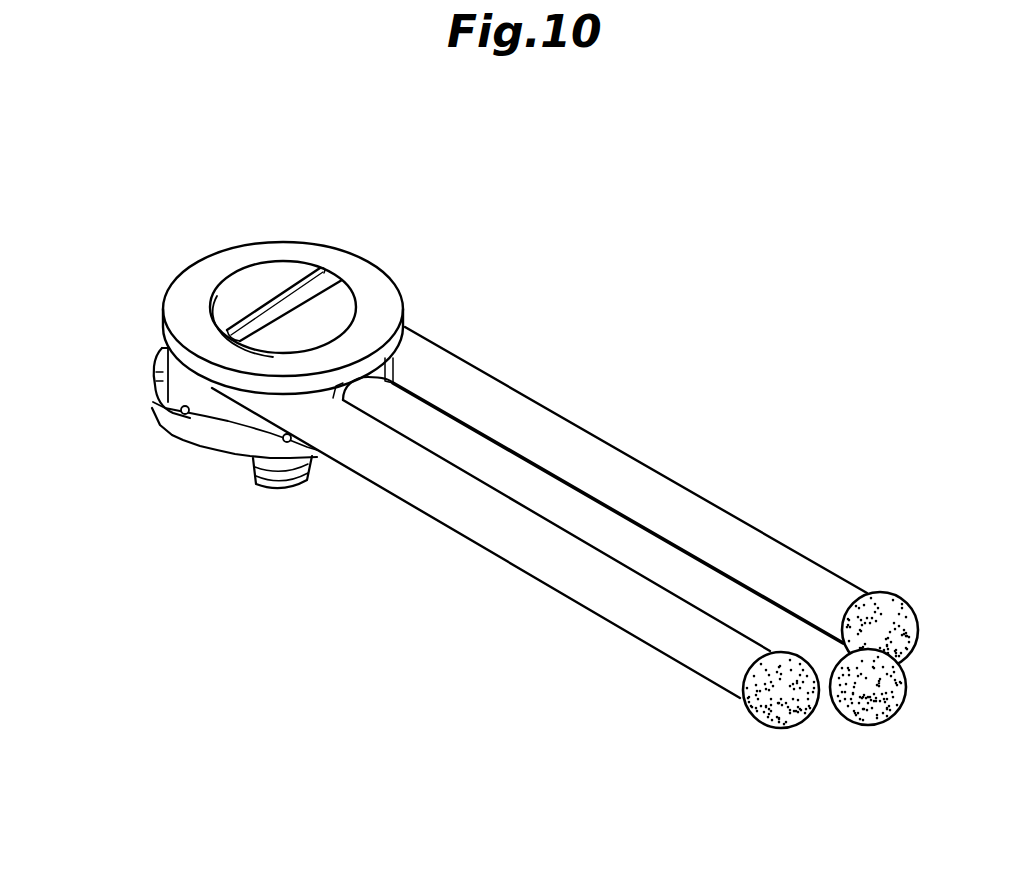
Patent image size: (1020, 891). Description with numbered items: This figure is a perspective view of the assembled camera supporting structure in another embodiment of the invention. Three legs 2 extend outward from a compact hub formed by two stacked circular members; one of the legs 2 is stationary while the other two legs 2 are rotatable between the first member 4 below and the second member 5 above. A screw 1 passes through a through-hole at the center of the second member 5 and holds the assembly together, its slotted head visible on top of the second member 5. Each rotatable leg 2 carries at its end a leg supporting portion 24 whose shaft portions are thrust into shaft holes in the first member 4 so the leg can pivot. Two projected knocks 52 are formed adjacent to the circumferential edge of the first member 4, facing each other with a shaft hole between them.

The screw 1 is at (252, 274).
The leg 2 is at (632, 467).
The first member 4 is at (210, 440).
The second member 5 is at (390, 279).
The leg supporting portion 24 is at (180, 373).
The projected knock 52 is at (180, 409).